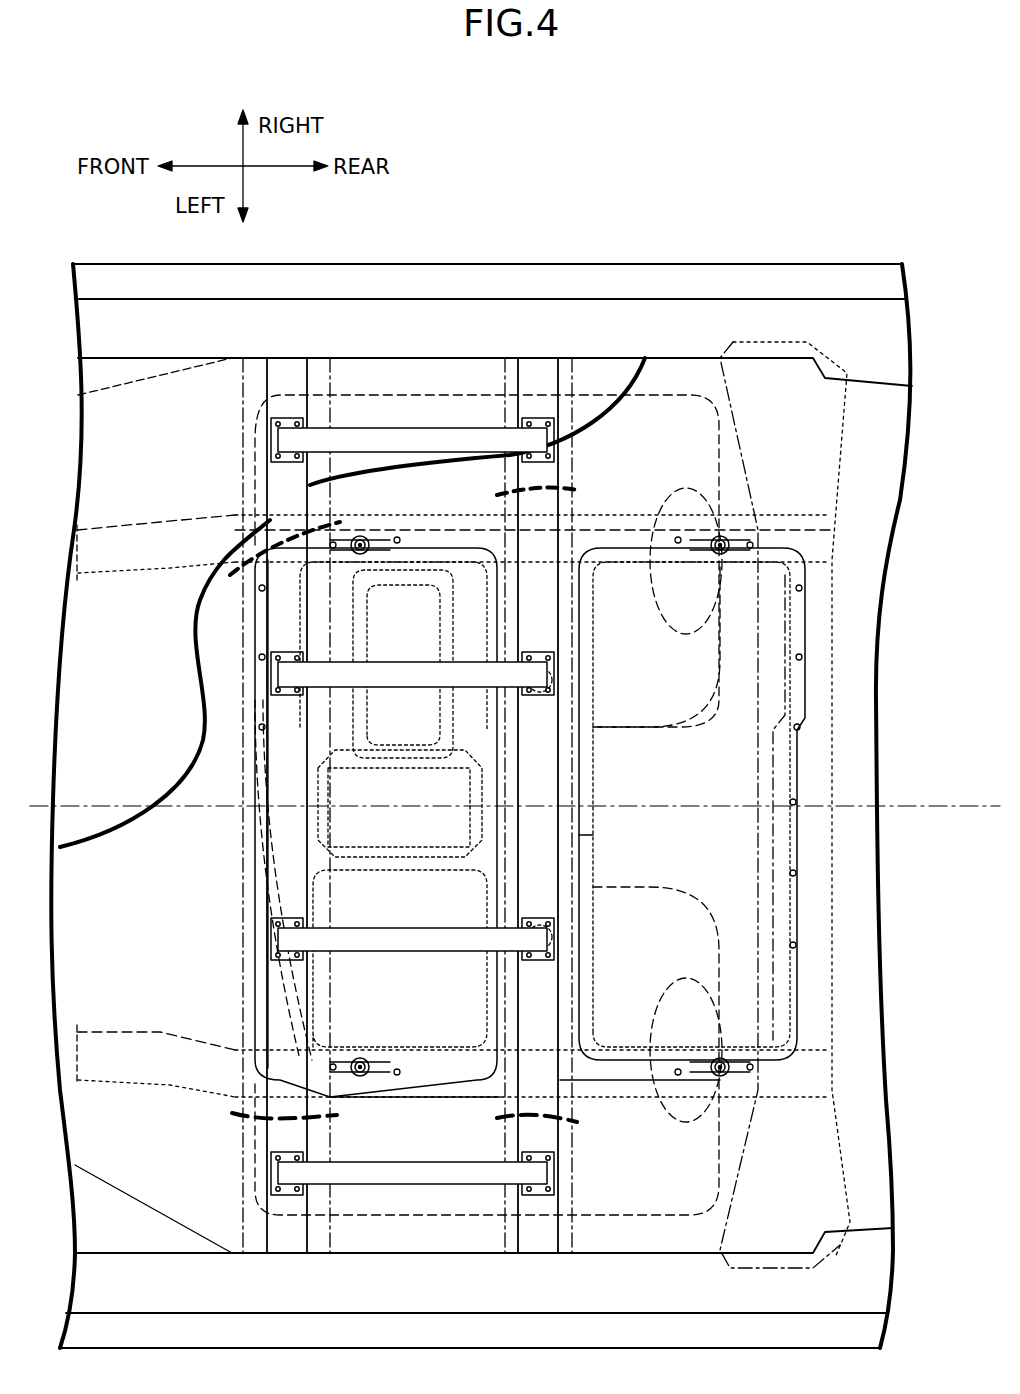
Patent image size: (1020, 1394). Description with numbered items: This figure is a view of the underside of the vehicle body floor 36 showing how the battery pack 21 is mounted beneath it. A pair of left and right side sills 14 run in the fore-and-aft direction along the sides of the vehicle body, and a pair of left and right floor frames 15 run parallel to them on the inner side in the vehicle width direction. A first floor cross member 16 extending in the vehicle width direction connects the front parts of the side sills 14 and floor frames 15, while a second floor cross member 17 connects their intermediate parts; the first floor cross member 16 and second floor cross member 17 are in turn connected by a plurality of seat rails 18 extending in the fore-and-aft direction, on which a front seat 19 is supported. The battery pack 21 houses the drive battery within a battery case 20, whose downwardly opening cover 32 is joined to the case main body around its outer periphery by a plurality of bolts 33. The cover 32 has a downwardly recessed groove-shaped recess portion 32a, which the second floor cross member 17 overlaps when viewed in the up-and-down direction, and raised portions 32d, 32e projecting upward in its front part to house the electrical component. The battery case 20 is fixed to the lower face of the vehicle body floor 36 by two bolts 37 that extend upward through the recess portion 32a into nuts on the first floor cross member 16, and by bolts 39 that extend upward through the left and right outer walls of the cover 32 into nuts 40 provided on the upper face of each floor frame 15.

The side sill 14 is at (567, 312).
The floor frame 15 is at (207, 513).
The first floor cross member 16 is at (240, 892).
The second floor cross member 17 is at (578, 838).
The seat rail 18 is at (452, 442).
The front seat 19 is at (400, 382).
The battery case 20 is at (600, 1086).
The battery pack 21 is at (620, 497).
The cover 32 is at (738, 790).
The recess portion 32a is at (558, 785).
The raised portion 32d is at (433, 580).
The raised portion 32e is at (381, 840).
The bolt 33 is at (397, 537).
The vehicle body floor 36 is at (138, 688).
The bolt 37 is at (550, 680).
The bolt 39 is at (360, 536).
The nut 40 is at (365, 556).